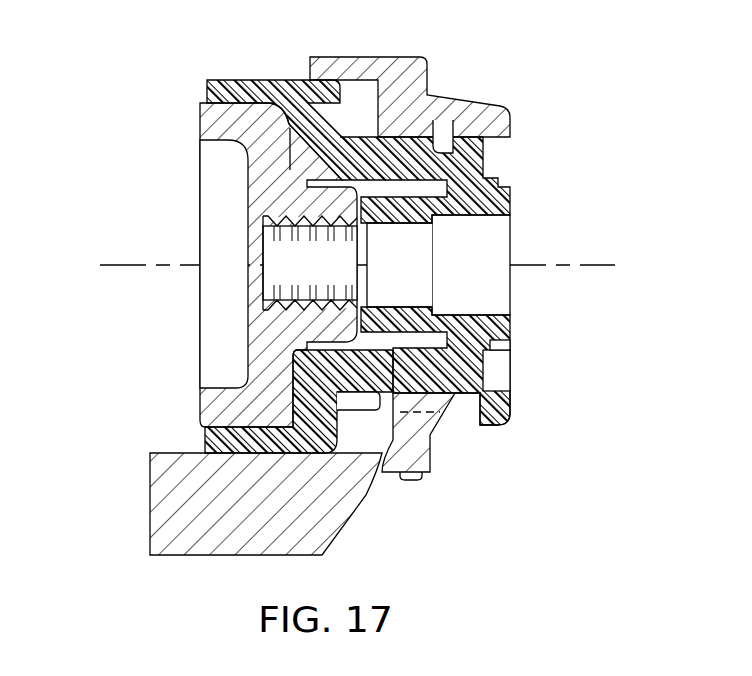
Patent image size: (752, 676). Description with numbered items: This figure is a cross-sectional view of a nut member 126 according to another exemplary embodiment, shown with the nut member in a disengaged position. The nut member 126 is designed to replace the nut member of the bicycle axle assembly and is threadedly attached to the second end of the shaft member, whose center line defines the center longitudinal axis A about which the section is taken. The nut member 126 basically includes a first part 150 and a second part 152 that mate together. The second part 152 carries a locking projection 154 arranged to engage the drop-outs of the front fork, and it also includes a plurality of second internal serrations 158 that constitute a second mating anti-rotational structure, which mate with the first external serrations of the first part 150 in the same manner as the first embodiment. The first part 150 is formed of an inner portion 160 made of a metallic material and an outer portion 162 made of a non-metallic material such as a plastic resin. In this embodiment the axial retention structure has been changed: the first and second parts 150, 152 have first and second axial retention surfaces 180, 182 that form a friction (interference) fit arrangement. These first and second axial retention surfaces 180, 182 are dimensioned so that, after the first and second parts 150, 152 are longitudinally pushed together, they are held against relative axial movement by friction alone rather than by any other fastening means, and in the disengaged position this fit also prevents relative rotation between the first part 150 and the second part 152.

The nut member 126 is at (541, 65).
The first part 150 is at (112, 66).
The second part 152 is at (430, 76).
The locking projection 154 is at (183, 503).
The second internal serrations 158 is at (453, 152).
The inner portion 160 is at (200, 118).
The outer portion 162 is at (205, 85).
The first axial retention surface 180 is at (443, 372).
The second axial retention surface 182 is at (486, 357).
The center longitudinal axis A is at (590, 265).